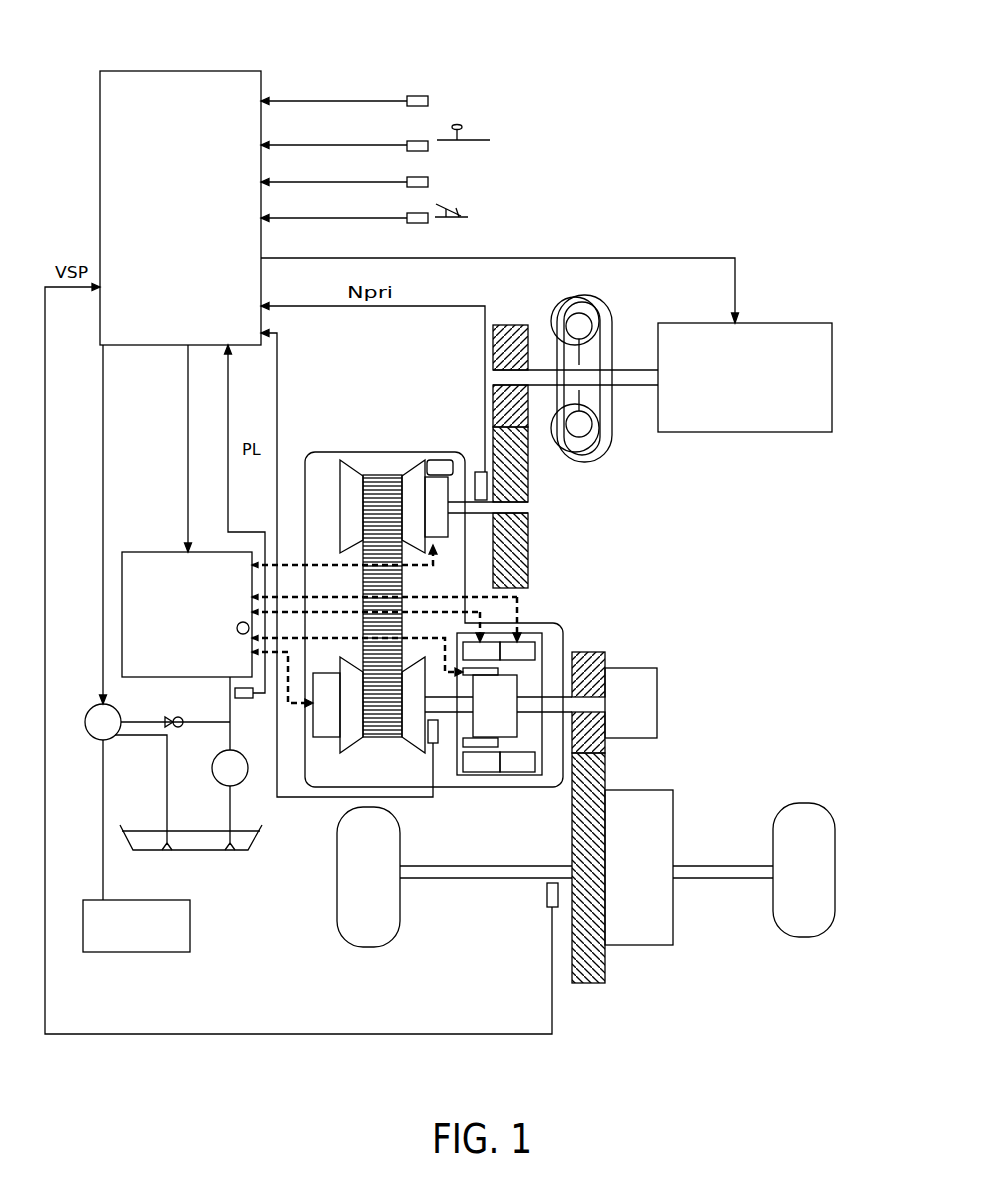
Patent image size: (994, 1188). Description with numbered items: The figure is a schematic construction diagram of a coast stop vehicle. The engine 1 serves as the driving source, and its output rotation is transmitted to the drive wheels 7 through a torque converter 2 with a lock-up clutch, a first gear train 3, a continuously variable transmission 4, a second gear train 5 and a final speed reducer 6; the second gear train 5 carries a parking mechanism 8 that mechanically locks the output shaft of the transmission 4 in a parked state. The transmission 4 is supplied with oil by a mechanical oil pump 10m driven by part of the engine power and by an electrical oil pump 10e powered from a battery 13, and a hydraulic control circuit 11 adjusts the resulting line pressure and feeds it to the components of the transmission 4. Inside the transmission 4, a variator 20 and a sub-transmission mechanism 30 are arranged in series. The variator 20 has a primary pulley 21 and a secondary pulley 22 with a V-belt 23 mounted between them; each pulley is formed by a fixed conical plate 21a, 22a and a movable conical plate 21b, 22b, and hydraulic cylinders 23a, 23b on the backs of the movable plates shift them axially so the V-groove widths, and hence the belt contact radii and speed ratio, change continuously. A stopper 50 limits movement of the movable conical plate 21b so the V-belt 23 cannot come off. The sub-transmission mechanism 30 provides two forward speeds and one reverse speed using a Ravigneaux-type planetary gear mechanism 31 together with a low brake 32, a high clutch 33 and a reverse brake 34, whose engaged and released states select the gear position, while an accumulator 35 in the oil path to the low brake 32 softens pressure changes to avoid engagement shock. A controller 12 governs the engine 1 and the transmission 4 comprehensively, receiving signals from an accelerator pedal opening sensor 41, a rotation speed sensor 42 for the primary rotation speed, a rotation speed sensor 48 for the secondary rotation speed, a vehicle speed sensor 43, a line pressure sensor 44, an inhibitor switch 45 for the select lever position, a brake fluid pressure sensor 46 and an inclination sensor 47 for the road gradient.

The engine 1 is at (808, 338).
The torque converter 2 is at (601, 320).
The first gear train 3 is at (502, 314).
The transmission 4 is at (455, 452).
The second gear train 5 is at (588, 995).
The final speed reducer 6 is at (637, 936).
The drive wheels 7 is at (368, 930).
The parking mechanism 8 is at (640, 695).
The electrical oil pump 10e is at (108, 741).
The mechanical oil pump 10m is at (225, 784).
The hydraulic control circuit 11 is at (144, 553).
The controller 12 is at (256, 74).
The battery 13 is at (180, 941).
The variator 20 is at (322, 476).
The primary pulley 21 is at (417, 464).
The fixed conical plate 21a is at (348, 465).
The movable conical plate 21b is at (416, 478).
The secondary pulley 22 is at (385, 754).
The fixed conical plate 22a is at (411, 738).
The movable conical plate 22b is at (348, 740).
The V-belt 23 is at (383, 476).
The hydraulic cylinder 23a is at (426, 476).
The hydraulic cylinder 23b is at (321, 728).
The sub-transmission mechanism 30 is at (533, 691).
The Ravigneaux-type planetary gear mechanism 31 is at (499, 700).
The low brake 32 is at (527, 579).
The high clutch 33 is at (487, 748).
The reverse brake 34 is at (541, 642).
The accumulator 35 is at (239, 634).
The accelerator pedal opening sensor 41 is at (413, 224).
The rotation speed sensor 42 is at (479, 470).
The vehicle speed sensor 43 is at (547, 905).
The line pressure sensor 44 is at (246, 699).
The inhibitor switch 45 is at (422, 143).
The brake fluid pressure sensor 46 is at (408, 186).
The inclination sensor 47 is at (419, 99).
The rotation speed sensor 48 is at (438, 742).
The stopper 50 is at (437, 459).